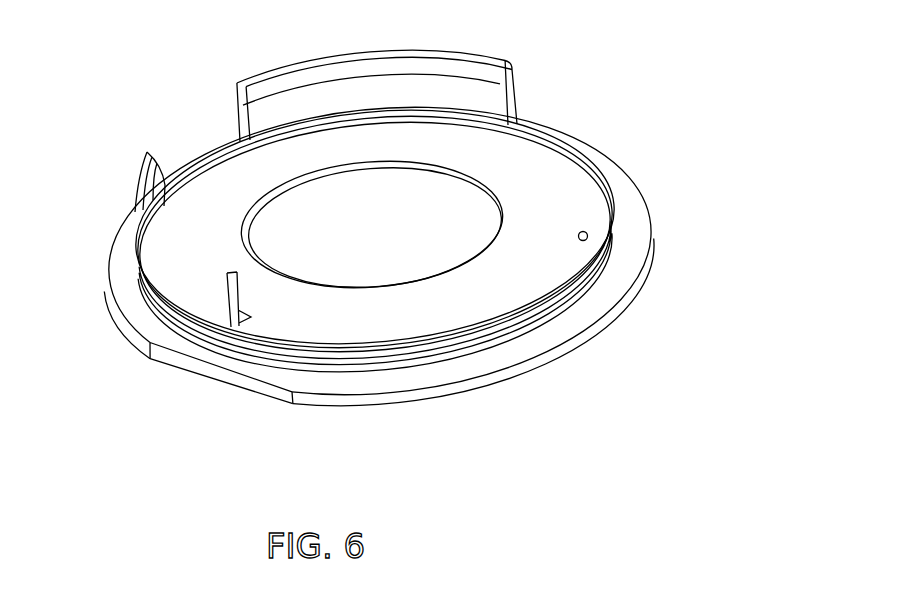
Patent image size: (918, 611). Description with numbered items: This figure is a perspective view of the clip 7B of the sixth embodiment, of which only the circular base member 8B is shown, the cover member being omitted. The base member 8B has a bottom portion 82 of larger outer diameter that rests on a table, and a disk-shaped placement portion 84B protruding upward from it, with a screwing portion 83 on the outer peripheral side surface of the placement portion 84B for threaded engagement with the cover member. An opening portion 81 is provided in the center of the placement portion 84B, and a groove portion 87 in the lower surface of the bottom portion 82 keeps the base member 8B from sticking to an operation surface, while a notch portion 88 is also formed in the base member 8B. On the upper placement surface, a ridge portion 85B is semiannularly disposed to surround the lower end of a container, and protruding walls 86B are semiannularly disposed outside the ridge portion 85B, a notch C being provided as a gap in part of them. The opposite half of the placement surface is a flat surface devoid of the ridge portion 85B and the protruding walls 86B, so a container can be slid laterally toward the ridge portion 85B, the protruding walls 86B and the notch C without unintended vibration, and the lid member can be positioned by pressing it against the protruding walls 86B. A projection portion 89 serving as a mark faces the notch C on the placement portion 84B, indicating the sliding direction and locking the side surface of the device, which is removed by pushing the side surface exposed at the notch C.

The clip 7B is at (777, 228).
The base member 8B is at (688, 175).
The opening portion 81 is at (430, 240).
The bottom portion 82 is at (456, 393).
The screwing portion 83 is at (595, 284).
The placement portion 84B is at (557, 153).
The ridge portion 85B is at (386, 73).
The protruding walls 86B is at (348, 72).
The groove portion 87 is at (590, 335).
The notch portion 88 is at (206, 379).
The projection portion 89 is at (588, 238).
The notch C is at (192, 137).